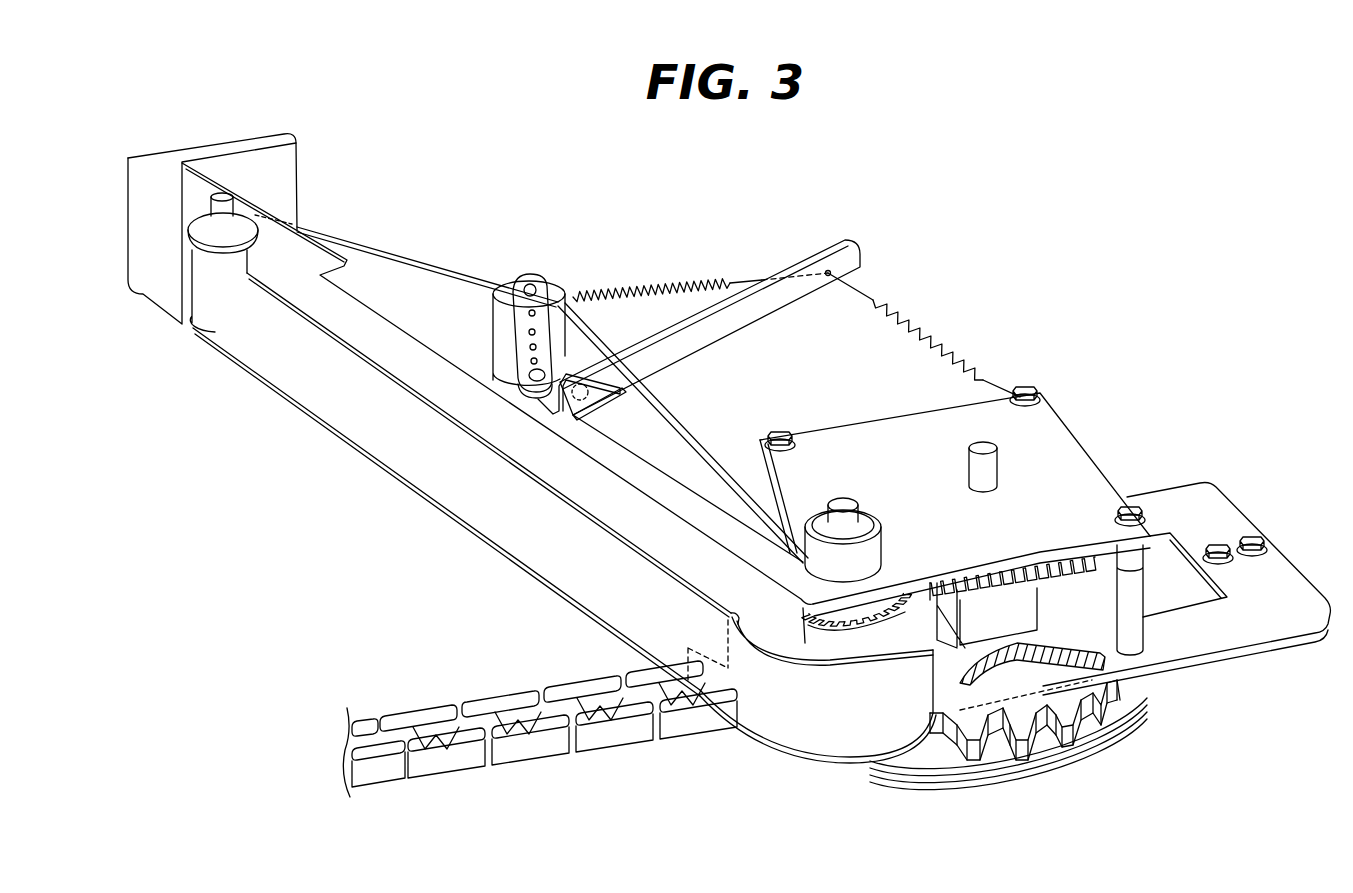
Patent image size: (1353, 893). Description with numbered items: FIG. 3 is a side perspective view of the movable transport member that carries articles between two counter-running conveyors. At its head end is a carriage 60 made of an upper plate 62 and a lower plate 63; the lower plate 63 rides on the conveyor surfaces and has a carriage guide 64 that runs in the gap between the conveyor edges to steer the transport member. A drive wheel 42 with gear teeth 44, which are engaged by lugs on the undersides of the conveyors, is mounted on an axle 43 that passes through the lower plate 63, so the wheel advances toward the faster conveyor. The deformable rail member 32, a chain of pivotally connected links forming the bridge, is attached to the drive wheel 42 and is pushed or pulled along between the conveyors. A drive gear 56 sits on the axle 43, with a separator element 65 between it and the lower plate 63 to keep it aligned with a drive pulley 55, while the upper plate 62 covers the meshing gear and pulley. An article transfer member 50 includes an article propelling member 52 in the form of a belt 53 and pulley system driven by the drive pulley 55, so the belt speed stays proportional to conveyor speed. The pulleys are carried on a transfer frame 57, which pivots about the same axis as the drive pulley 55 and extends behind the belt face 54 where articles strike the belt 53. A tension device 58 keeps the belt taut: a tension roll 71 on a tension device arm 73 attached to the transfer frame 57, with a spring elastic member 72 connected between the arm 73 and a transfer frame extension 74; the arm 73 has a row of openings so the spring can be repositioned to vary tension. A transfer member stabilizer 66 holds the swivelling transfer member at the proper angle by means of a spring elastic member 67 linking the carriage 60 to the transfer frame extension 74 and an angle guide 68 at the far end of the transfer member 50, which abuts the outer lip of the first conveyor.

The deformable rail member 32 is at (524, 770).
The drive wheel 42 is at (1002, 699).
The axle 43 is at (997, 465).
The gear teeth 44 is at (1023, 714).
The article transfer member 50 is at (559, 441).
The article propelling member 52 is at (215, 362).
The belt 53 is at (450, 493).
The belt face 54 is at (390, 447).
The drive pulley 55 is at (850, 648).
The drive gear 56 is at (1093, 557).
The transfer frame 57 is at (330, 315).
The tension device 58 is at (576, 298).
The carriage 60 is at (868, 478).
The upper plate 62 is at (1050, 433).
The lower plate 63 is at (1186, 550).
The carriage guide 64 is at (1198, 590).
The separator element 65 is at (1028, 617).
The transfer member stabilizer 66 is at (923, 319).
The elastic member 67 is at (930, 347).
The angle guide 68 is at (163, 157).
The tension roll 71 is at (563, 307).
The elastic member 72 is at (673, 292).
The tension device arm 73 is at (518, 323).
The transfer frame extension 74 is at (747, 323).